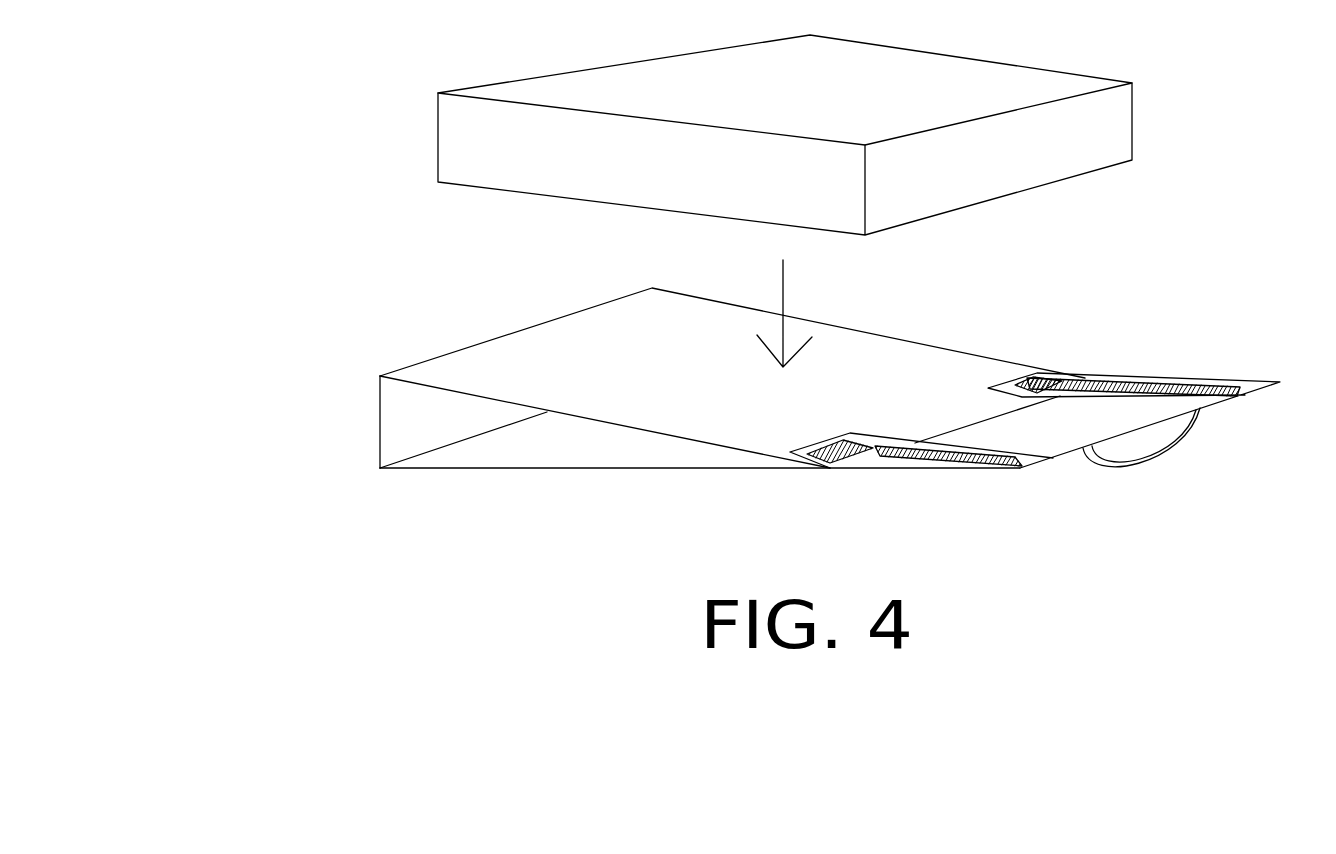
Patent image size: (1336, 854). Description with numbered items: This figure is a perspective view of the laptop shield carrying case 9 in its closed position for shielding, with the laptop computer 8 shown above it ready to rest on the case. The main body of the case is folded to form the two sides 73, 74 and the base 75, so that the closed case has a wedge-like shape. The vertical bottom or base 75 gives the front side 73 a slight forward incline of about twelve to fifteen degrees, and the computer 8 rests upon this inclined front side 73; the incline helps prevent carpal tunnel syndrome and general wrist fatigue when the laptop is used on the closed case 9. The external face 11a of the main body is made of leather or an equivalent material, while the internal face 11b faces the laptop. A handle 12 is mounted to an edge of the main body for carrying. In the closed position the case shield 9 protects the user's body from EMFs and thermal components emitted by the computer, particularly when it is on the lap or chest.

The laptop computer 8 is at (1102, 127).
The carrying case 9 is at (1058, 360).
The external face 11a is at (858, 368).
The internal face 11b is at (600, 458).
The handle 12 is at (1157, 457).
The front side 73 is at (560, 355).
The side 74 is at (477, 443).
The base 75 is at (380, 415).